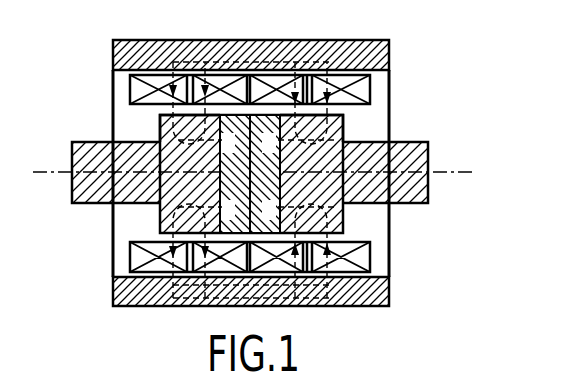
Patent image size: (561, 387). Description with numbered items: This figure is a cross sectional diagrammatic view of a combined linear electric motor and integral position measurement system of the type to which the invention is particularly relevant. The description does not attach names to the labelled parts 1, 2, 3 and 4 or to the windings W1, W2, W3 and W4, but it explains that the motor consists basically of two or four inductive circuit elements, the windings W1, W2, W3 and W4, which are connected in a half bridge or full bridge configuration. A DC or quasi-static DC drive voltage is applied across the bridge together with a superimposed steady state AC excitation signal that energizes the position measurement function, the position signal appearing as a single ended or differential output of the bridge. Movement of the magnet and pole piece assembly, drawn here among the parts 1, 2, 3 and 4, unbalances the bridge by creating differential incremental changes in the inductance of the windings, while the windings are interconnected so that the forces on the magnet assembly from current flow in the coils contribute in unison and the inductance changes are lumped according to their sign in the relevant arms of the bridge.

The rotor 1 is at (199, 193).
The left stator pole piece 2 is at (146, 130).
The right stator pole piece 3 is at (359, 131).
The housing yoke 4 is at (400, 290).
The winding W1 is at (159, 48).
The winding W2 is at (222, 48).
The winding W3 is at (282, 48).
The winding W4 is at (342, 48).